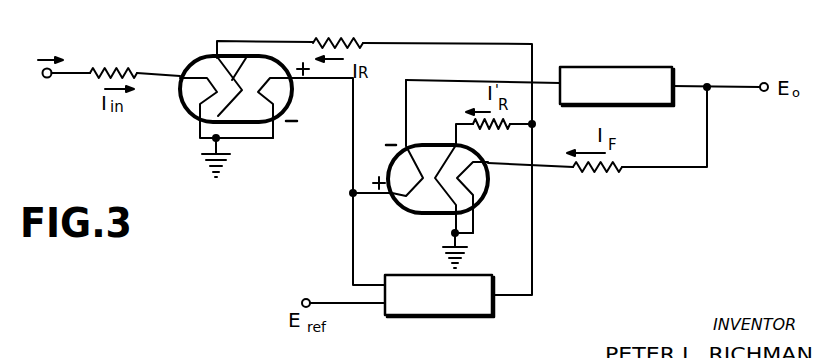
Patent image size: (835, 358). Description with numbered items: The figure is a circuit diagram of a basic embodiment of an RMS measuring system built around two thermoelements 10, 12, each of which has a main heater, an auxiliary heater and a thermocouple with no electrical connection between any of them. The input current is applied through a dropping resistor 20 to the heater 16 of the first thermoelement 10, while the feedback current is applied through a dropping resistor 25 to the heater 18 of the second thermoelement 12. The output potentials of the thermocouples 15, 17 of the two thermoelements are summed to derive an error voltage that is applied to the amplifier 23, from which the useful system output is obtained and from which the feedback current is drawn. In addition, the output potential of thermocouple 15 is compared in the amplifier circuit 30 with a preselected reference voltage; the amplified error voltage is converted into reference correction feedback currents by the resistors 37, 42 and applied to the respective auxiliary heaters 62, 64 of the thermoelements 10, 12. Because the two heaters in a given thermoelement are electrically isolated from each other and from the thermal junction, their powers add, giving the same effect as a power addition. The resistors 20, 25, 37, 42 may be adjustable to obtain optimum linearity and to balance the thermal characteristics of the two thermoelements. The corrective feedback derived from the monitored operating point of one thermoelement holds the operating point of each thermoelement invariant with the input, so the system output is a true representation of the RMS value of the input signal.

The thermoelement 10 is at (192, 65).
The thermoelement 12 is at (407, 210).
The thermocouple 15 is at (290, 108).
The heater 16 is at (183, 105).
The thermocouple 17 is at (422, 147).
The heater 18 is at (477, 186).
The dropping resistor 20 is at (116, 68).
The amplifier 23 is at (598, 45).
The dropping resistor 25 is at (598, 173).
The amplifier circuit 30 is at (433, 316).
The resistor 37 is at (341, 38).
The resistor 42 is at (485, 130).
The auxiliary heater 62 is at (244, 58).
The auxiliary heater 64 is at (441, 200).